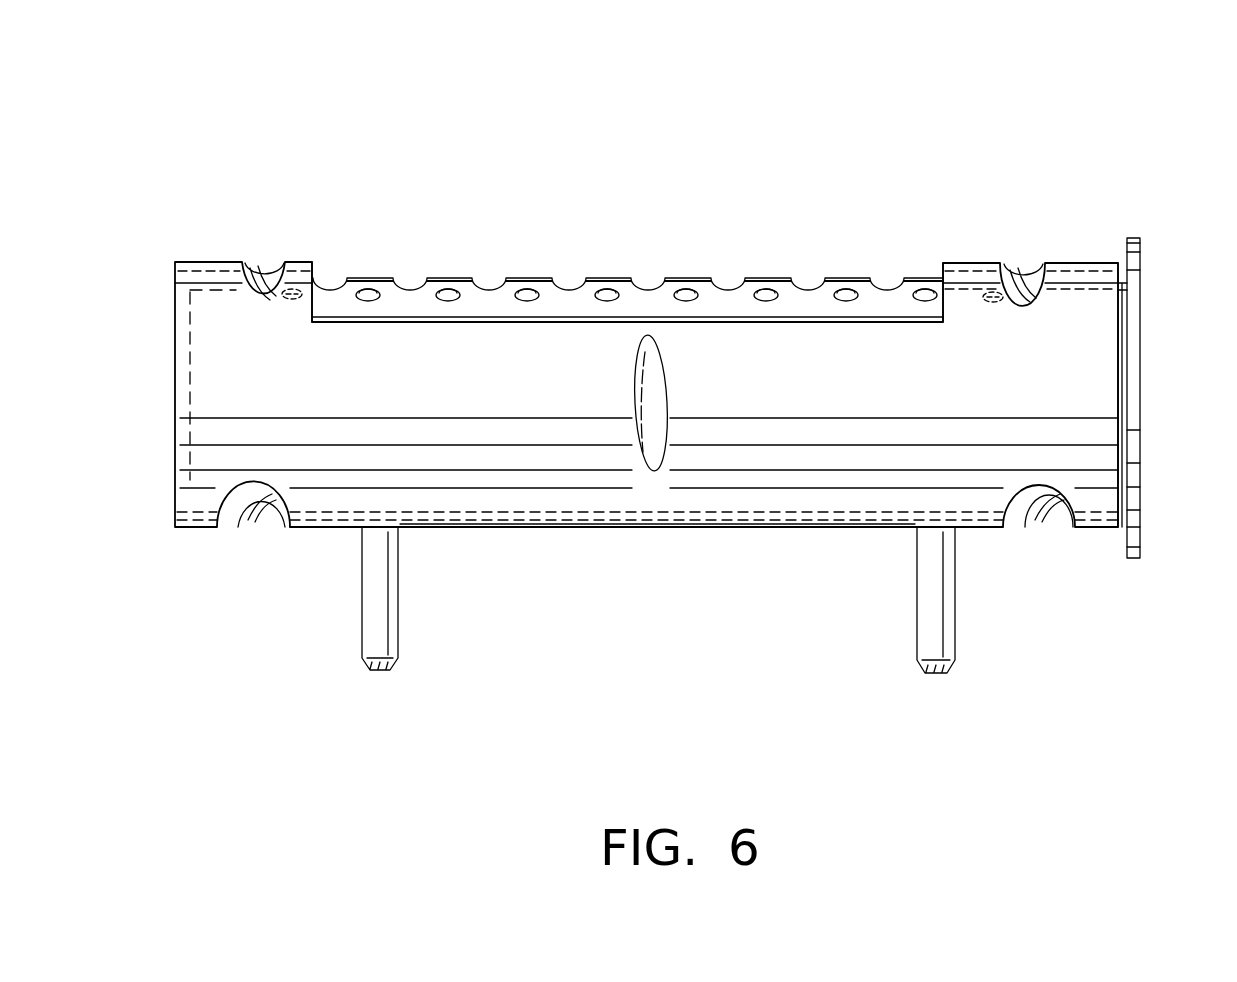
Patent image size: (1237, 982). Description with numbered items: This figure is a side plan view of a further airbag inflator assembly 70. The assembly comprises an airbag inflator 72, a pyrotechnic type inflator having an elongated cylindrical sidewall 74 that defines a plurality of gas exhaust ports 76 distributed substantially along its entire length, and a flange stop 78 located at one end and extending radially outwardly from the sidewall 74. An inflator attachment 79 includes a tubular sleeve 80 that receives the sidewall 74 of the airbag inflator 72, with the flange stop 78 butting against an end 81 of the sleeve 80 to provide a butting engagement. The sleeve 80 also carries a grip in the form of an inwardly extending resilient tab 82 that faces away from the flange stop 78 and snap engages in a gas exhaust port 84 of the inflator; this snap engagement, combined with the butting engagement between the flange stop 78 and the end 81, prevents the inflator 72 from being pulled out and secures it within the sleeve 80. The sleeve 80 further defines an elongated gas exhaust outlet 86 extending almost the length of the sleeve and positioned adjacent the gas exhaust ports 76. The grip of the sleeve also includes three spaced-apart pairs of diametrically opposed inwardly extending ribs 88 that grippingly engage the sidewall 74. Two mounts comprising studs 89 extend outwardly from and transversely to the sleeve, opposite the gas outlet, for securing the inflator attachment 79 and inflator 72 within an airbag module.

The inflator assembly 70 is at (717, 68).
The airbag inflator 72 is at (452, 262).
The elongated cylindrical sidewall 74 is at (527, 277).
The gas exhaust ports 76 is at (730, 288).
The flange stop 78 is at (1133, 310).
The inflator attachment 79 is at (487, 548).
The tubular sleeve 80 is at (578, 530).
The end of the sleeve 81 is at (1105, 265).
The resilient tab 82 is at (937, 373).
The gas exhaust port 84 is at (642, 345).
The elongated gas exhaust outlet 86 is at (325, 292).
The ribs 88 is at (238, 300).
The studs 89 is at (392, 640).